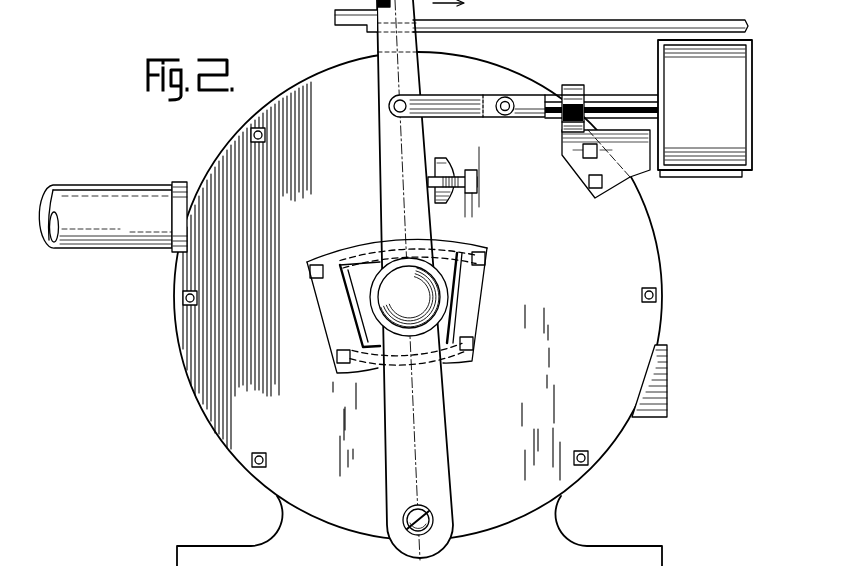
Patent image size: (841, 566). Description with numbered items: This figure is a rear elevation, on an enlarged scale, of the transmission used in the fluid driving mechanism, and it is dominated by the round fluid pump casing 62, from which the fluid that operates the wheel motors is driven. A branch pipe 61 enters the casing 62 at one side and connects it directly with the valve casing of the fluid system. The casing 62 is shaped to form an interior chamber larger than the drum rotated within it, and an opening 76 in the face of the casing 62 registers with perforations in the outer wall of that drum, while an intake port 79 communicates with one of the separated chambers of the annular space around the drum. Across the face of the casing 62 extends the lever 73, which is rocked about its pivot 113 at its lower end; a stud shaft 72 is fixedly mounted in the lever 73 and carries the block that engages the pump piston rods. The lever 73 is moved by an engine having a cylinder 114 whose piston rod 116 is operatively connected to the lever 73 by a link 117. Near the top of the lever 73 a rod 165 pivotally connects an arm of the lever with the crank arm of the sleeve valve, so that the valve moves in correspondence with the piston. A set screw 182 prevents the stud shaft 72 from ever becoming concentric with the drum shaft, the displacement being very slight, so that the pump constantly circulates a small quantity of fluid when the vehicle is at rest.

The branch pipe 61 is at (84, 233).
The fluid pump casing 62 is at (638, 260).
The stud shaft 72 is at (409, 297).
The lever 73 is at (440, 383).
The opening 76 is at (350, 280).
The intake port 79 is at (667, 378).
The pivot 113 is at (403, 511).
The cylinder 114 is at (732, 100).
The piston rod 116 is at (620, 103).
The link 117 is at (469, 112).
The rod 165 is at (587, 26).
The set screw 182 is at (458, 168).